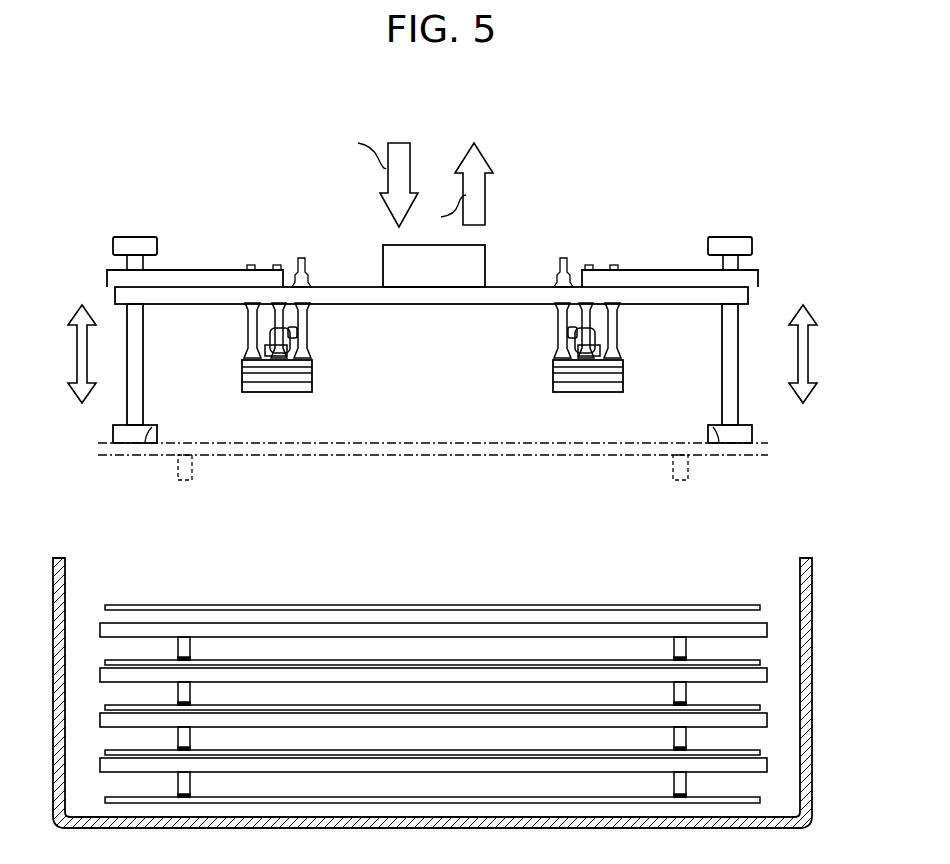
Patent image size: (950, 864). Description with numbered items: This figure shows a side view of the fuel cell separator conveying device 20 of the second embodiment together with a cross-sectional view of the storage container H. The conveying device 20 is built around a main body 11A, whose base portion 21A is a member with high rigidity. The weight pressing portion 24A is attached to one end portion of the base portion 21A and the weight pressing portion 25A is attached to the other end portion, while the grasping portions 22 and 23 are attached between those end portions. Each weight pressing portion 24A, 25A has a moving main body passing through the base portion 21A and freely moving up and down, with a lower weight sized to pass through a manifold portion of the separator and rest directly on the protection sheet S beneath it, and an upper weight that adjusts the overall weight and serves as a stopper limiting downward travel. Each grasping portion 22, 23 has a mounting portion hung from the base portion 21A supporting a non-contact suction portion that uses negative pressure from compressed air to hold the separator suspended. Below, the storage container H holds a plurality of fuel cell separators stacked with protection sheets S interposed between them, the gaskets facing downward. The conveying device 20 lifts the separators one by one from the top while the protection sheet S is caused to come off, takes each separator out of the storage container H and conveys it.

The fuel cell separator conveying device 20 is at (520, 198).
The main body 11A is at (525, 265).
The base portion 21A is at (333, 287).
The grasping portion 22 is at (319, 340).
The grasping portion 23 is at (546, 340).
The weight pressing portion 24A is at (135, 232).
The weight pressing portion 25A is at (742, 231).
The protection sheet S is at (631, 605).
The storage container H is at (812, 608).